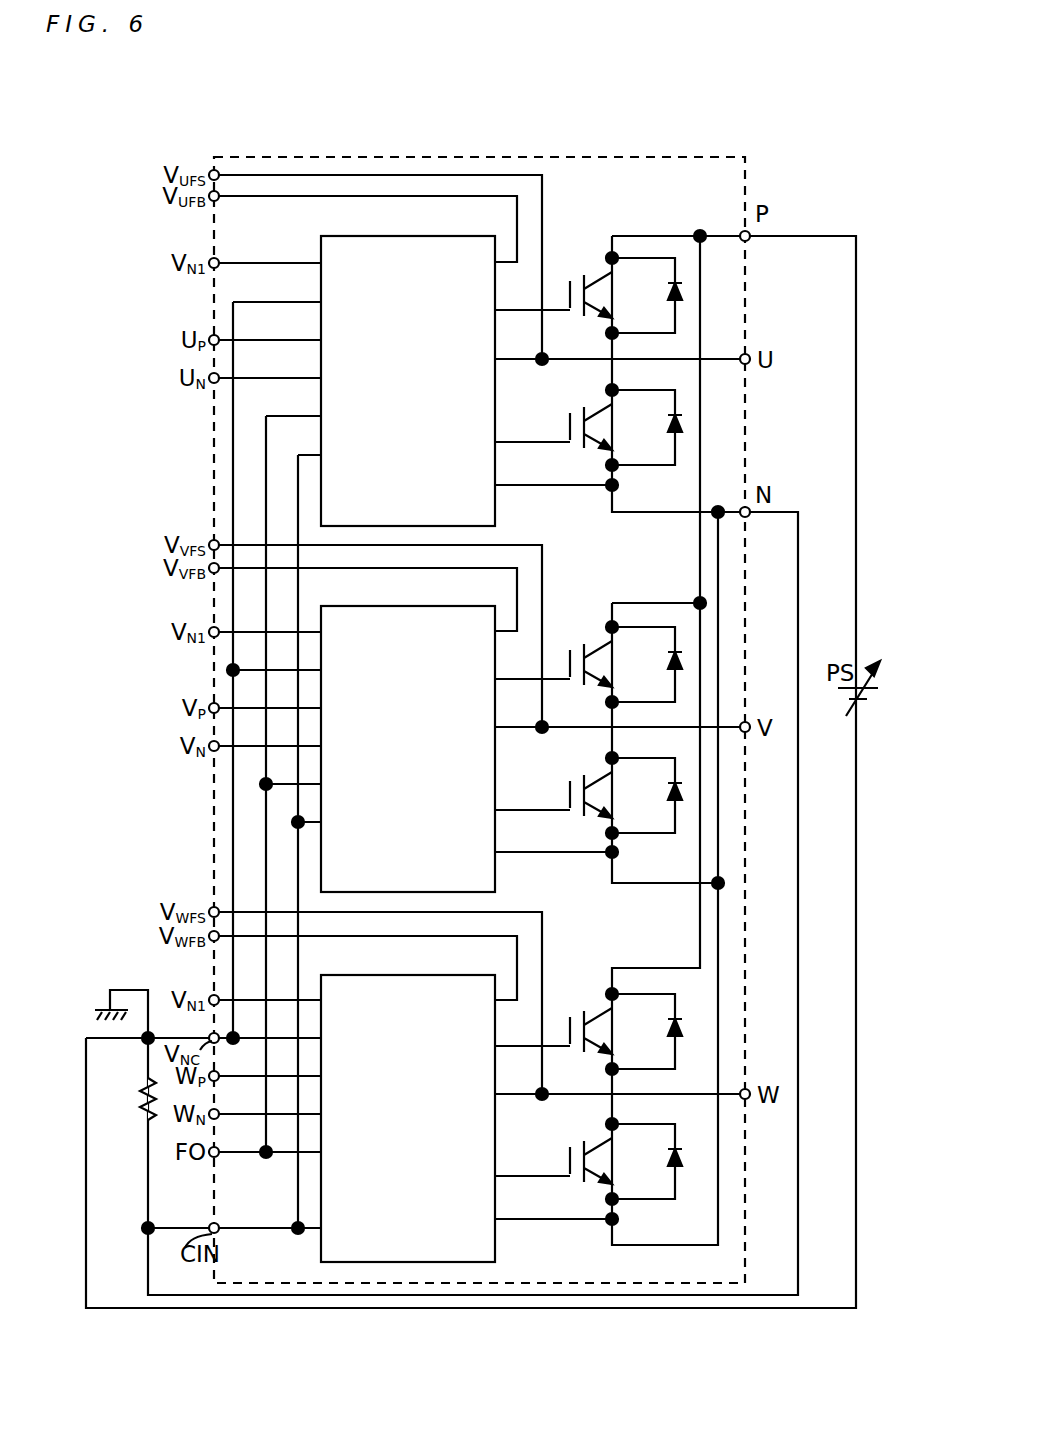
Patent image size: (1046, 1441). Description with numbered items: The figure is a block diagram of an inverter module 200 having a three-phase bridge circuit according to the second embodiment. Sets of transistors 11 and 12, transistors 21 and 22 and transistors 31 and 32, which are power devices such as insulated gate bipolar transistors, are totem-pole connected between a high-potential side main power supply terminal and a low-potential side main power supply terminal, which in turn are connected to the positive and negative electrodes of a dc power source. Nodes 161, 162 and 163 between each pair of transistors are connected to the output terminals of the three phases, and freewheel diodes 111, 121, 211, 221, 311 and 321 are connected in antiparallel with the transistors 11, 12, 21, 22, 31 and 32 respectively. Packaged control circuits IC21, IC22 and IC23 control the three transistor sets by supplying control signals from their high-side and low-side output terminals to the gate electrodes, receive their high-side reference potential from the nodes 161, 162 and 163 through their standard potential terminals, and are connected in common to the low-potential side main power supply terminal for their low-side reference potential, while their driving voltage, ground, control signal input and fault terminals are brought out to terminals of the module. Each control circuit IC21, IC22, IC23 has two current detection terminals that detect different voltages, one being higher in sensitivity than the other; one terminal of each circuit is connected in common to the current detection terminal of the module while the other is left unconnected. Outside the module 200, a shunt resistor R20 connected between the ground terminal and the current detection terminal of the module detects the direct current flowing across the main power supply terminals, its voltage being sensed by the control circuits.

The inverter module 200 is at (830, 147).
The packaged control circuit IC21 is at (398, 236).
The packaged control circuit IC22 is at (398, 606).
The packaged control circuit IC23 is at (398, 975).
The transistor 11 is at (588, 289).
The transistor 12 is at (588, 425).
The transistor 21 is at (588, 659).
The transistor 22 is at (588, 792).
The transistor 31 is at (588, 1027).
The transistor 32 is at (588, 1158).
The freewheel diode 111 is at (666, 291).
The freewheel diode 121 is at (666, 421).
The freewheel diode 211 is at (666, 659).
The freewheel diode 221 is at (666, 789).
The freewheel diode 311 is at (666, 1026).
The freewheel diode 321 is at (666, 1155).
The node 161 is at (618, 358).
The node 162 is at (618, 726).
The node 163 is at (618, 1093).
The shunt resistor R20 is at (147, 1102).